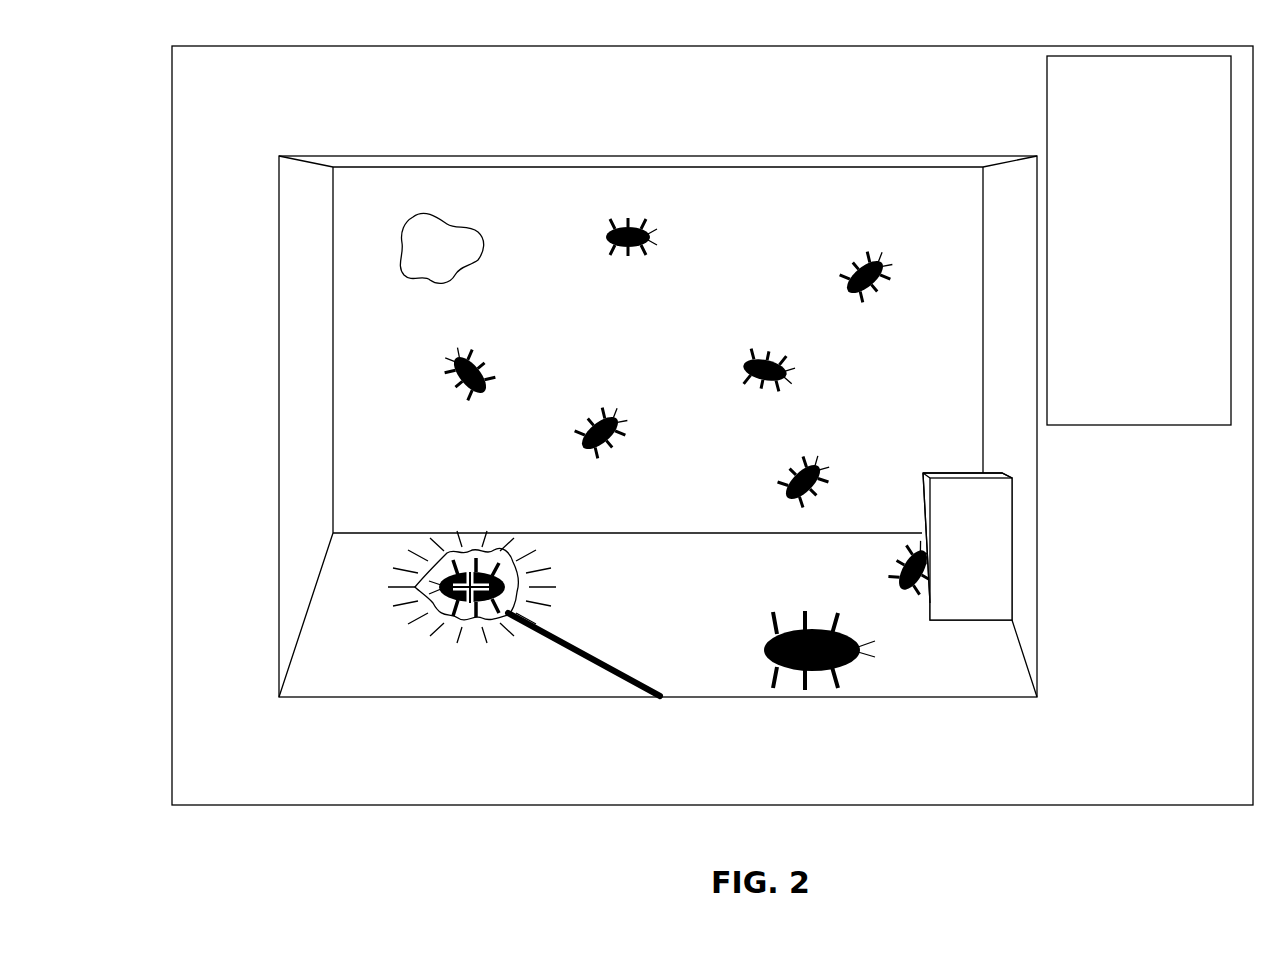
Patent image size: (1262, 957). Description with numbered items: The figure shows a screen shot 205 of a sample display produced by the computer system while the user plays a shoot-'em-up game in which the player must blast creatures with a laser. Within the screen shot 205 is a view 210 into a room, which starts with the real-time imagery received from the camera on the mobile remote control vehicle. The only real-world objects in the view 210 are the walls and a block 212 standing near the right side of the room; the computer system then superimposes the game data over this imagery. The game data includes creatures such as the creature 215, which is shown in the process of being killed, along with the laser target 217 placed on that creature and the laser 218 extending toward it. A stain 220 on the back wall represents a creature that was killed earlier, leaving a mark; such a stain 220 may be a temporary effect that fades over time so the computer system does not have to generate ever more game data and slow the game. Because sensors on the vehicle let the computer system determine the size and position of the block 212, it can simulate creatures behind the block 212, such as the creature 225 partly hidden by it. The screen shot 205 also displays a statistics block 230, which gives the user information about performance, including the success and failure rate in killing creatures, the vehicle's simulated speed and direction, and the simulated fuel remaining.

The screen shot 205 is at (172, 100).
The view 210 is at (333, 157).
The block 212 is at (943, 473).
The creature 215 is at (440, 618).
The laser target 217 is at (466, 657).
The laser 218 is at (553, 633).
The stain 220 is at (443, 283).
The creature 225 is at (907, 572).
The statistics block 230 is at (1047, 98).